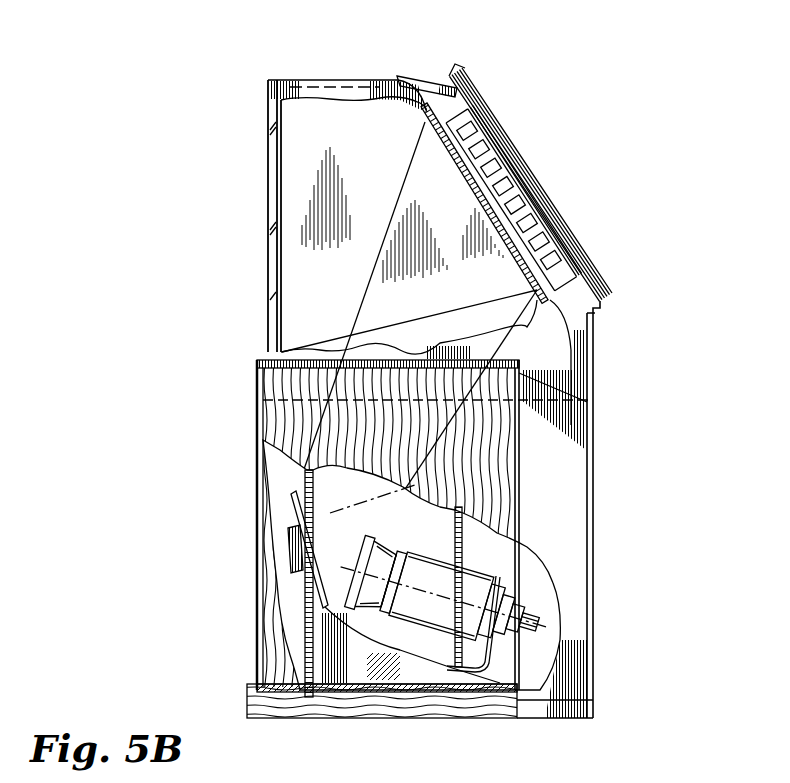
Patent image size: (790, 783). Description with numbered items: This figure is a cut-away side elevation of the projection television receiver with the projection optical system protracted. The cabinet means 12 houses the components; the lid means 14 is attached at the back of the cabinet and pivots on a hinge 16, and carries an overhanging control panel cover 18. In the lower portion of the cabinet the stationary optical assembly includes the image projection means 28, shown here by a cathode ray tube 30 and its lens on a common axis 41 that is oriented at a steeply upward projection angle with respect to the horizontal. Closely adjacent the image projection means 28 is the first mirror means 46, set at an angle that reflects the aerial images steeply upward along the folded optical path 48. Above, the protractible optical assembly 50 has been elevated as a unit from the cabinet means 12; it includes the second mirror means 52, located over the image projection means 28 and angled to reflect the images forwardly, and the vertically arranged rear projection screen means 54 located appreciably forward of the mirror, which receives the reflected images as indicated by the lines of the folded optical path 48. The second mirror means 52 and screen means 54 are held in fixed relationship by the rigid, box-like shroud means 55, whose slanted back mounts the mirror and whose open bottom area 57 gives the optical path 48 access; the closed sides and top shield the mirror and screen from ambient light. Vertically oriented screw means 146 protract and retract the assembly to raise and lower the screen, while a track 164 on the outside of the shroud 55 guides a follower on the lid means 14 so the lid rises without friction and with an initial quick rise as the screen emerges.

The cabinet means 12 is at (422, 539).
The lid means 14 is at (465, 144).
The hinge 16 is at (594, 403).
The control panel cover 18 is at (434, 80).
The image projection means 28 is at (300, 650).
The cathode ray tube 30 is at (427, 600).
The common axis 41 is at (585, 650).
The first mirror means 46 is at (310, 556).
The folded optical path 48 is at (425, 445).
The protractible optical assembly 50 is at (291, 190).
The second mirror means 52 is at (478, 118).
The rear projection screen means 54 is at (277, 284).
The shroud means 55 is at (335, 78).
The open bottom area 57 is at (277, 411).
The screw means 146 is at (305, 490).
The track 164 is at (513, 201).